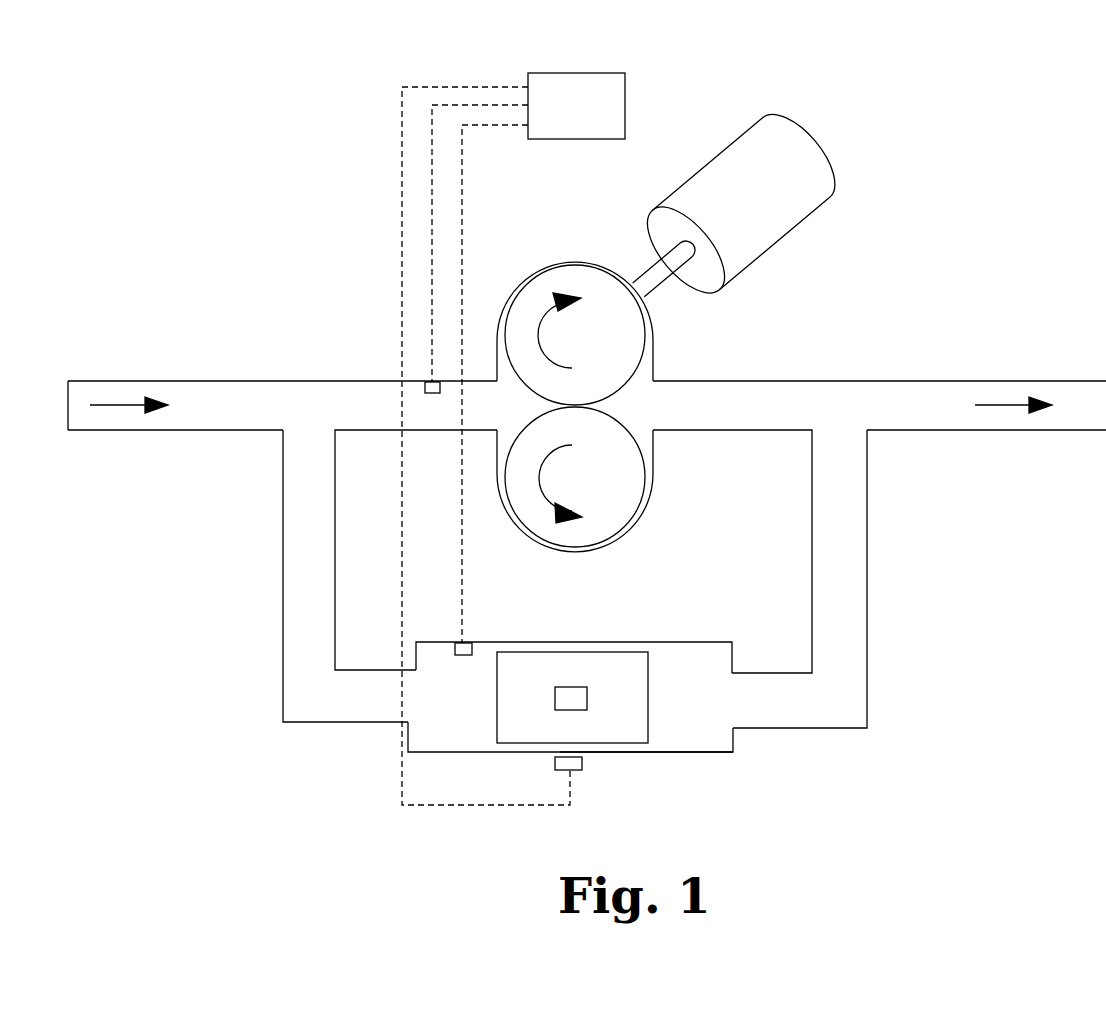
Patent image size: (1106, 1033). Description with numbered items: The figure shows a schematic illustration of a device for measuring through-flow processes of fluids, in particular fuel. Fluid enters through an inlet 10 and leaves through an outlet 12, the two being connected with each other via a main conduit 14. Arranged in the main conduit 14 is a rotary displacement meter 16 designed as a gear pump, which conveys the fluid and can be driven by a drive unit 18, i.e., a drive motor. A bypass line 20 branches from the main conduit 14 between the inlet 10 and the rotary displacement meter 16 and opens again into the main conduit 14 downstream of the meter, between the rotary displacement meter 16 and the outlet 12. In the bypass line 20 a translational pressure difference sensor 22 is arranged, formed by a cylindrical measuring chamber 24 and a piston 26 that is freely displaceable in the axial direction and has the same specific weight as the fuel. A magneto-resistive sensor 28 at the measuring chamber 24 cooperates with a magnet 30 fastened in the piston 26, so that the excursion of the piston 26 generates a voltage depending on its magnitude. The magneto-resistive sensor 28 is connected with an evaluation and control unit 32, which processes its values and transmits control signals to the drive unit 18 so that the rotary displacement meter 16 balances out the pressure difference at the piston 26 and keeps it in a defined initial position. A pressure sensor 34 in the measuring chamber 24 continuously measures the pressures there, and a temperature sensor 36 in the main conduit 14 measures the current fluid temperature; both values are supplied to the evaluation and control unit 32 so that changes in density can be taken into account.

The inlet 10 is at (218, 402).
The outlet 12 is at (950, 393).
The main conduit 14 is at (373, 395).
The rotary displacement meter 16 is at (595, 295).
The drive unit 18 is at (787, 163).
The bypass line 20 is at (843, 577).
The translational pressure difference sensor 22 is at (738, 766).
The measuring chamber 24 is at (687, 737).
The piston 26 is at (617, 730).
The magneto-resistive sensor 28 is at (575, 772).
The magnet 30 is at (565, 692).
The evaluation and control unit 32 is at (572, 88).
The pressure sensor 34 is at (462, 656).
The temperature sensor 36 is at (430, 393).